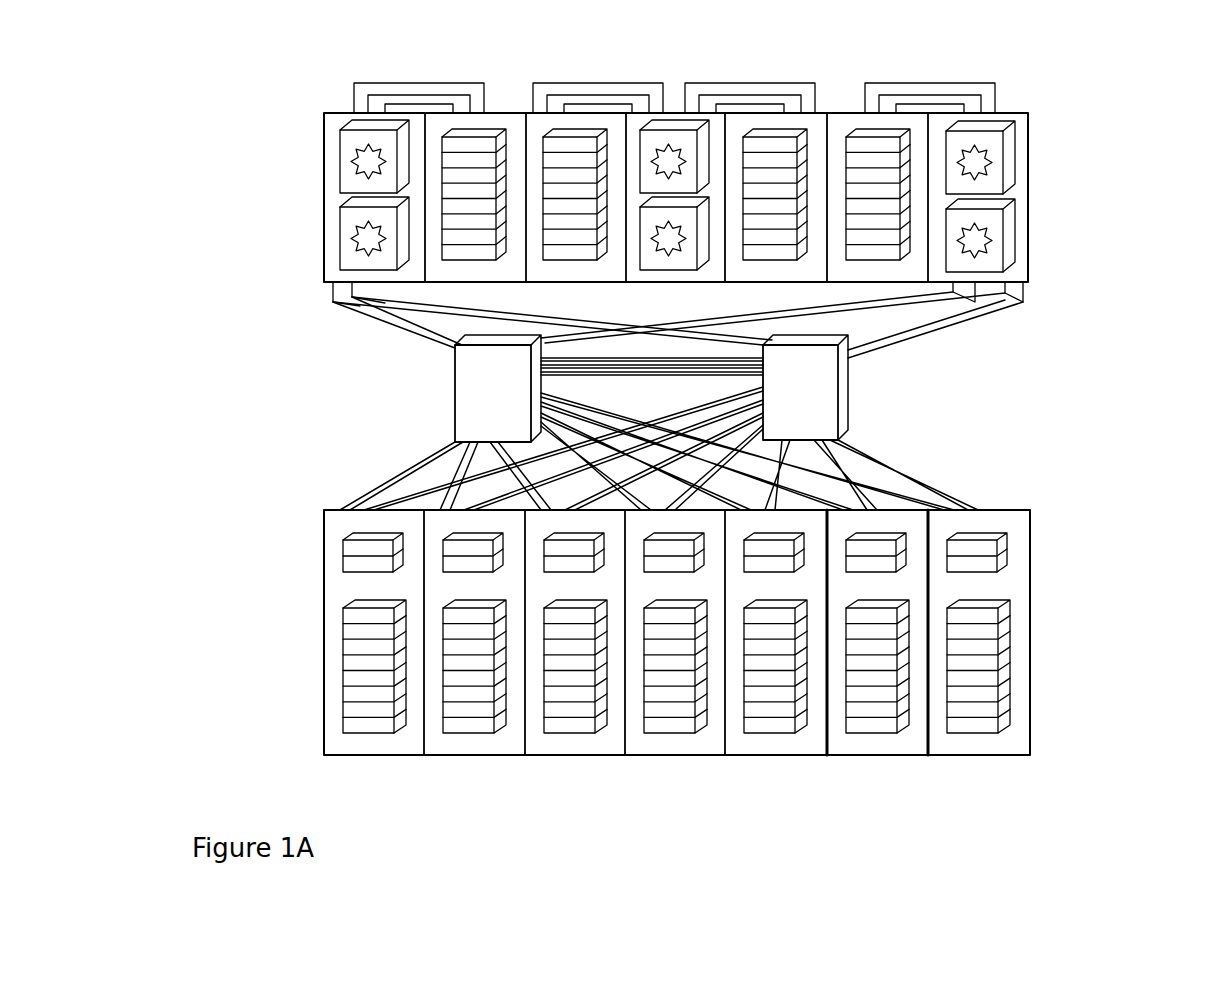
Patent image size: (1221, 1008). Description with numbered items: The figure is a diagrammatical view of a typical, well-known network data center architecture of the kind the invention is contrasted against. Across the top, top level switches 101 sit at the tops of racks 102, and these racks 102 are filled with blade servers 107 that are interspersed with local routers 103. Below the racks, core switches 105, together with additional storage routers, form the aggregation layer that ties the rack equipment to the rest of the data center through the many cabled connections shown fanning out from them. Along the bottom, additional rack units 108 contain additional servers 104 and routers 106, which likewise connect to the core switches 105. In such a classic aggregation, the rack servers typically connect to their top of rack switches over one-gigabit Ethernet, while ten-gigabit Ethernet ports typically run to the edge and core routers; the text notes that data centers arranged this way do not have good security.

The top level switches 101 is at (1010, 97).
The racks 102 is at (307, 297).
The local routers 103 is at (362, 242).
The additional servers 104 is at (307, 727).
The core switches 105 is at (867, 262).
The routers 106 is at (1043, 515).
The blade servers 107 is at (878, 207).
The additional rack units 108 is at (1018, 768).